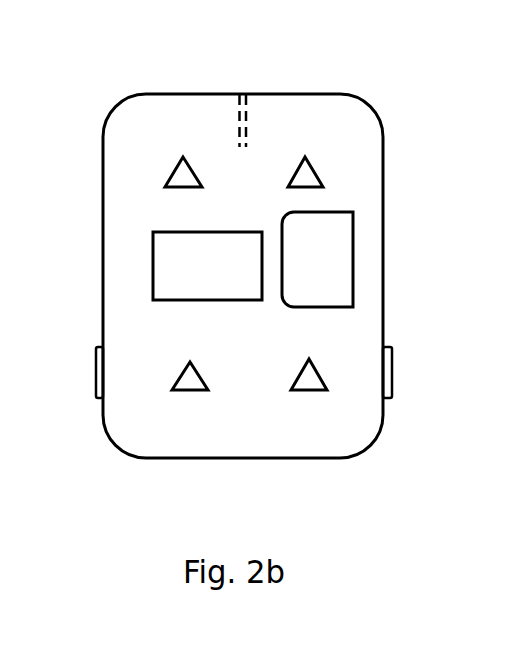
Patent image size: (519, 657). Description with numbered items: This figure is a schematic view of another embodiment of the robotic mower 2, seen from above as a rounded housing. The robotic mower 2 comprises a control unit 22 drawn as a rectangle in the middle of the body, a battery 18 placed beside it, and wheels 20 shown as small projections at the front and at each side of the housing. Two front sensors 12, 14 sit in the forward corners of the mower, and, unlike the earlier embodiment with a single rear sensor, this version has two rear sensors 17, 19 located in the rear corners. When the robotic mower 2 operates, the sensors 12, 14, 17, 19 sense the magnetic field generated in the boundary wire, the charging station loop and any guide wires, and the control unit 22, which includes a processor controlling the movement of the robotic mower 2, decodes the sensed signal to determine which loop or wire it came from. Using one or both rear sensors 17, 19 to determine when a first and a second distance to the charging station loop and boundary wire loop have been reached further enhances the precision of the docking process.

The robotic mower 2 is at (251, 442).
The front sensor 12 is at (307, 172).
The front sensor 14 is at (182, 177).
The rear sensor 17 is at (177, 381).
The battery 18 is at (317, 259).
The rear sensor 19 is at (313, 372).
The wheels 20 is at (240, 96).
The control unit 22 is at (207, 266).